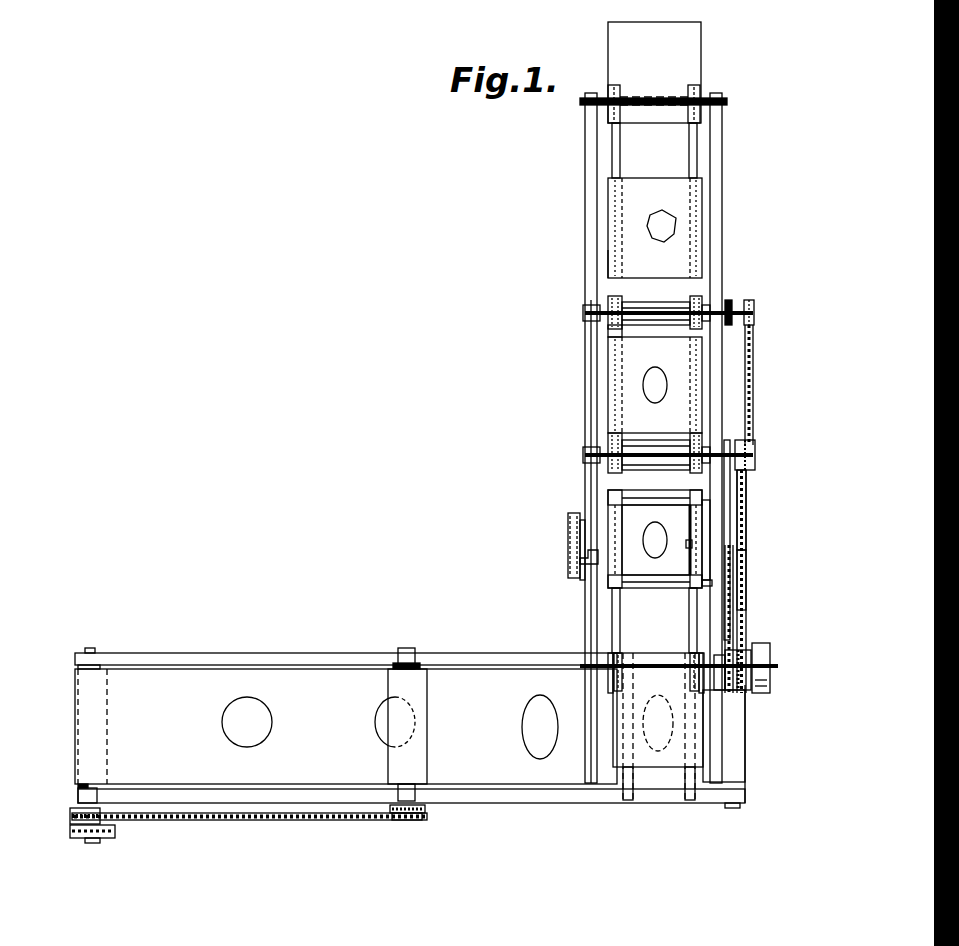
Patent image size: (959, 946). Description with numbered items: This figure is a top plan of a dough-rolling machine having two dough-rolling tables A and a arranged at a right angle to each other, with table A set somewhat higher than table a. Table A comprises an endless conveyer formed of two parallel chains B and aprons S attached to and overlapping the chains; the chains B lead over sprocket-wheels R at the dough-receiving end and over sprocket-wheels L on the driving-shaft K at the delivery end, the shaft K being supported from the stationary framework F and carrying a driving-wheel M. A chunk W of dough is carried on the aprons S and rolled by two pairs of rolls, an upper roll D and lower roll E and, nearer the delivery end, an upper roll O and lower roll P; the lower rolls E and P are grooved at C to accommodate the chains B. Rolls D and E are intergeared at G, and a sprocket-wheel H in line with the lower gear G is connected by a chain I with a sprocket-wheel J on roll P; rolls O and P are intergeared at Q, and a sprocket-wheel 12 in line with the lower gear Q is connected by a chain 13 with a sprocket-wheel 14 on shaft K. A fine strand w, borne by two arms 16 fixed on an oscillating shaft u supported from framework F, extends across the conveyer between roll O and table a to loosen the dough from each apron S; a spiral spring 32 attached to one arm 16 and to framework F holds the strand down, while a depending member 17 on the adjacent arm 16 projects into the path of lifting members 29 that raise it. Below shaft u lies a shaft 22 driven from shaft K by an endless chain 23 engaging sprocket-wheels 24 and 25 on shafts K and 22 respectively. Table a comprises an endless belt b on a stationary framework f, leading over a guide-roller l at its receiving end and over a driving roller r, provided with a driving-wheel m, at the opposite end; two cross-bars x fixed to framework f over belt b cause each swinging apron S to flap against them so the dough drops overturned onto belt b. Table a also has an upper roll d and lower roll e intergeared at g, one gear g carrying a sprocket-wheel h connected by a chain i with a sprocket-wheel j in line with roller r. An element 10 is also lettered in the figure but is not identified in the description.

The stationary framework F is at (585, 205).
The aprons S is at (608, 52).
The sprocket-wheels R is at (688, 115).
The endless chains B is at (612, 150).
The chunk of dough W is at (652, 218).
The dough-rolling table A is at (622, 268).
The upper roll D is at (665, 306).
The annular grooves C is at (608, 300).
The lower roll E is at (608, 330).
The lower roll P is at (608, 440).
The upper roll O is at (656, 456).
The strand-bearing arms 16 is at (608, 520).
The oscillating shaft u is at (658, 500).
The carriage side plate 10 is at (700, 532).
The shaft 22 is at (700, 556).
The strand w is at (638, 582).
The spiral spring 32 is at (710, 583).
The lifting members 29 is at (568, 530).
The depending member 17 is at (590, 582).
The sprocket-wheels L is at (615, 663).
The gears G is at (732, 308).
The sprocket-wheel H is at (754, 323).
The chain I is at (753, 355).
The sprocket-wheel J is at (755, 457).
The gears Q is at (727, 480).
The sprocket-wheel 12 is at (746, 472).
The chain 13 is at (746, 528).
The sprocket-wheel 25 is at (733, 548).
The endless chain 23 is at (746, 598).
The driving-wheel M is at (762, 655).
The driving-shaft K is at (772, 668).
The sprocket-wheel 14 is at (703, 687).
The sprocket-wheel 24 is at (727, 683).
The dough-rolling table a is at (346, 702).
The endless belt or conveyer b is at (236, 668).
The stationary framework f is at (460, 662).
The upper roll d is at (401, 726).
The lower roll e is at (410, 650).
The gears g is at (425, 808).
The sprocket-wheel h is at (420, 817).
The chain i is at (250, 820).
The sprocket-wheel j is at (105, 820).
The driving-wheel m is at (100, 837).
The roller r is at (80, 788).
The cross-bars x is at (687, 773).
The guide-roller l is at (745, 790).